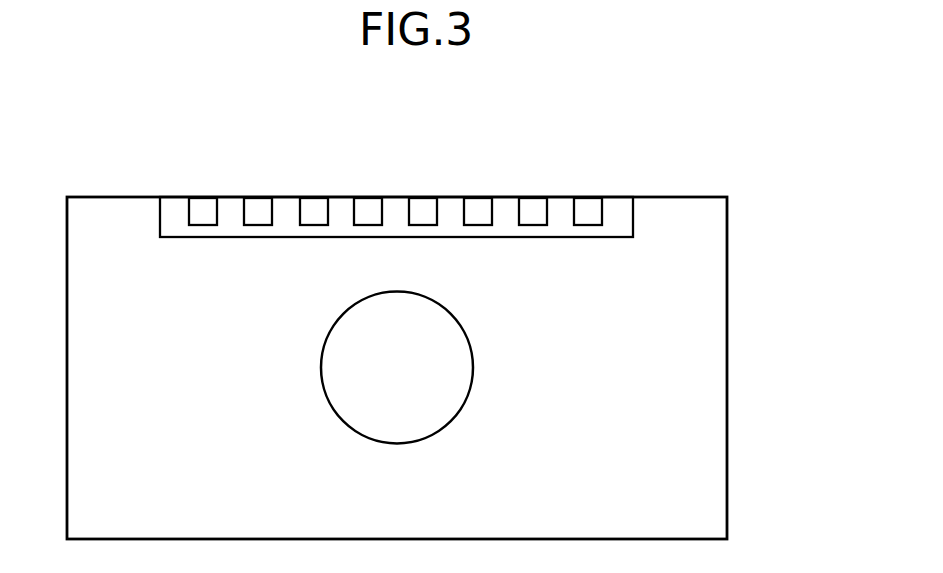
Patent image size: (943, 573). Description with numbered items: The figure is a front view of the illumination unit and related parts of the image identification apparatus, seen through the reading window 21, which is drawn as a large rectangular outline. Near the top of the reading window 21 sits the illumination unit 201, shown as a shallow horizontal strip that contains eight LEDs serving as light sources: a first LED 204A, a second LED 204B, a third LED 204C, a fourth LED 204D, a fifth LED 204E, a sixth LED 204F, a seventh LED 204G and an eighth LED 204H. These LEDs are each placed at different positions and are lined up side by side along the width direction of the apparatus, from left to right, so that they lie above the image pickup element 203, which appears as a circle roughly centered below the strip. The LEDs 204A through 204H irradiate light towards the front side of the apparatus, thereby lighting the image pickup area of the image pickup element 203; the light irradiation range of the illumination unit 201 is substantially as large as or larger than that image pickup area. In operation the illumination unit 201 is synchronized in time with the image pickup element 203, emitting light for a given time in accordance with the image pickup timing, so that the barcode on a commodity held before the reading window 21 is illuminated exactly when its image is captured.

The reading window 21 is at (727, 243).
The illumination unit 201 is at (131, 157).
The image pickup element 203 is at (473, 365).
The first LED 204A is at (189, 208).
The second LED 204B is at (244, 208).
The third LED 204C is at (300, 208).
The fourth LED 204D is at (354, 208).
The fifth LED 204E is at (409, 208).
The sixth LED 204F is at (464, 208).
The seventh LED 204G is at (519, 208).
The eighth LED 204H is at (574, 208).